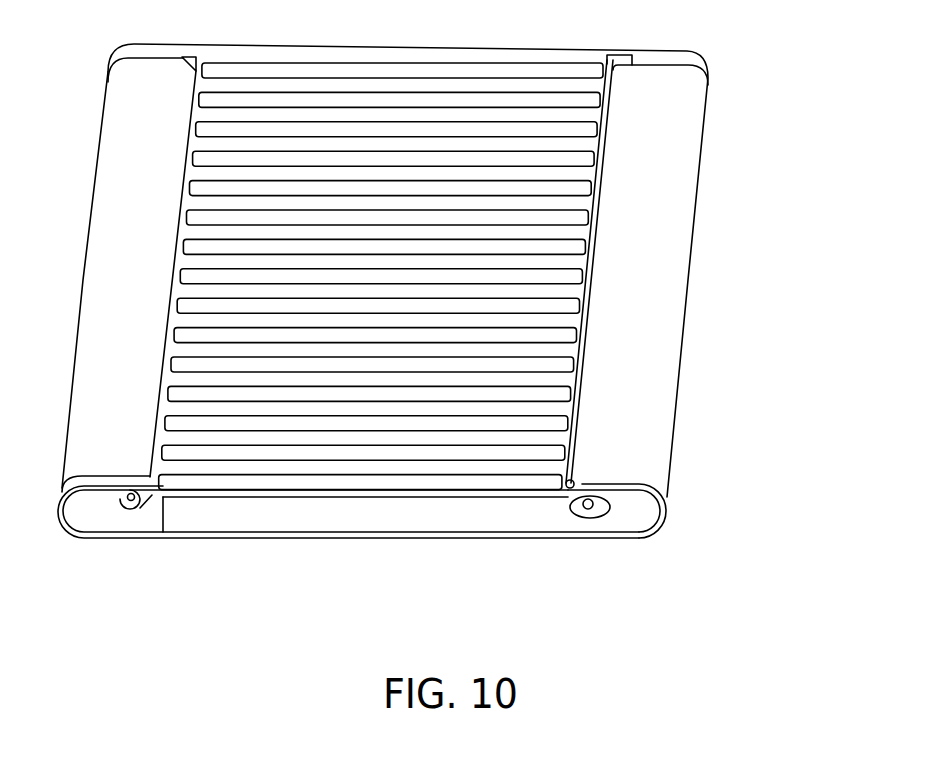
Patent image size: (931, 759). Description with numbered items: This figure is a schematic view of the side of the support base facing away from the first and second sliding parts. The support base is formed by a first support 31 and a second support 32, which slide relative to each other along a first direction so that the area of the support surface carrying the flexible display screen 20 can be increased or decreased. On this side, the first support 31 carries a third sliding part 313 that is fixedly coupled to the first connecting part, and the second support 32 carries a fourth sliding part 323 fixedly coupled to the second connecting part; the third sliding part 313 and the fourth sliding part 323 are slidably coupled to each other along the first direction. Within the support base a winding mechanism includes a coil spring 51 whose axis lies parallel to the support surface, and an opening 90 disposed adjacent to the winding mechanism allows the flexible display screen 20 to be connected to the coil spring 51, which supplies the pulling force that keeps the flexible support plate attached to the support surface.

The flexible display screen 20 is at (668, 348).
The first support 31 is at (93, 517).
The second support 32 is at (633, 527).
The third sliding part 313 is at (158, 435).
The fourth sliding part 323 is at (588, 272).
The coil spring 51 is at (120, 512).
The opening 90 is at (560, 503).